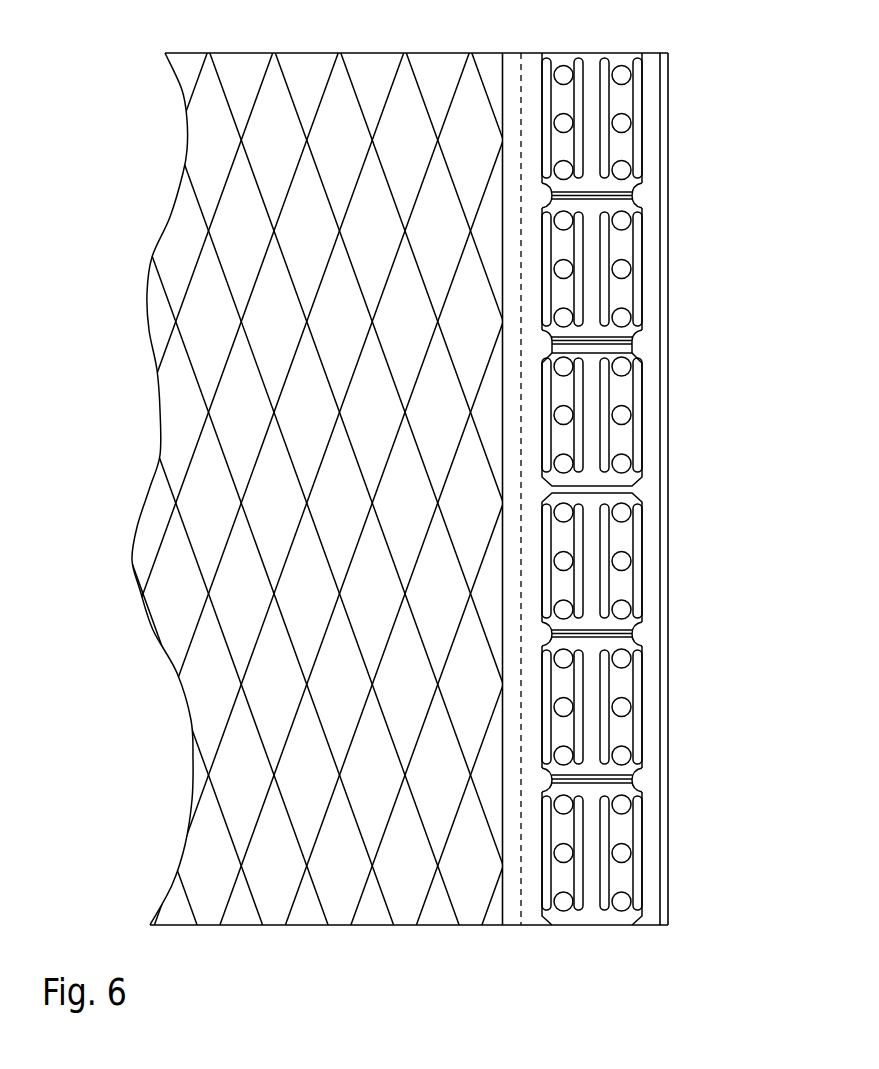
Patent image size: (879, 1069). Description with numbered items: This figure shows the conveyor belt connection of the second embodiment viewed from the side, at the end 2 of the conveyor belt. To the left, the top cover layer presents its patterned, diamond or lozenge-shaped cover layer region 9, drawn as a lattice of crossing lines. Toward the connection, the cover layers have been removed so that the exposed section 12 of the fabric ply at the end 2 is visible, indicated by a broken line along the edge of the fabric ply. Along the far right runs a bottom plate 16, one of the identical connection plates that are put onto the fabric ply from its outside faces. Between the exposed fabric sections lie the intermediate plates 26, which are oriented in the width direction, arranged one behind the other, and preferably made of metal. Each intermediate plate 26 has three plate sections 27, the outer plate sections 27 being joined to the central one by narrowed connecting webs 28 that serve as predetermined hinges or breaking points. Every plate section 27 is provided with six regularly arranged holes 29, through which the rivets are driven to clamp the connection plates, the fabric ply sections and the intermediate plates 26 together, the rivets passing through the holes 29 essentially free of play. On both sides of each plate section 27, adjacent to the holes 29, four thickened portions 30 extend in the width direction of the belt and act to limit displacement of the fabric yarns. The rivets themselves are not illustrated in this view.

The end of the conveyor belt 2 is at (458, 948).
The lozenge-shaped cover layer region 9 is at (308, 68).
The exposed section 12 is at (533, 68).
The bottom plate 16 is at (662, 110).
The intermediate plate 26 is at (656, 162).
The plate section 27 is at (653, 543).
The narrowed connecting web 28 is at (633, 633).
The holes 29 is at (563, 367).
The thickened portions 30 is at (577, 542).